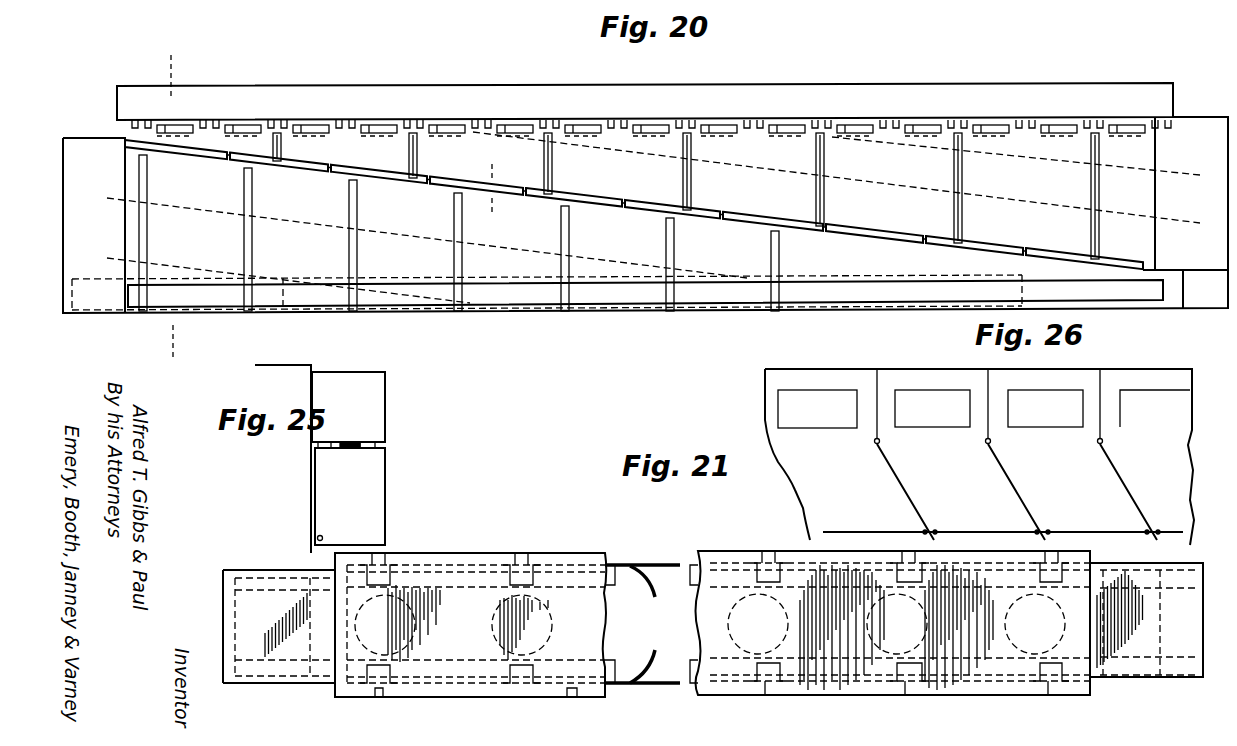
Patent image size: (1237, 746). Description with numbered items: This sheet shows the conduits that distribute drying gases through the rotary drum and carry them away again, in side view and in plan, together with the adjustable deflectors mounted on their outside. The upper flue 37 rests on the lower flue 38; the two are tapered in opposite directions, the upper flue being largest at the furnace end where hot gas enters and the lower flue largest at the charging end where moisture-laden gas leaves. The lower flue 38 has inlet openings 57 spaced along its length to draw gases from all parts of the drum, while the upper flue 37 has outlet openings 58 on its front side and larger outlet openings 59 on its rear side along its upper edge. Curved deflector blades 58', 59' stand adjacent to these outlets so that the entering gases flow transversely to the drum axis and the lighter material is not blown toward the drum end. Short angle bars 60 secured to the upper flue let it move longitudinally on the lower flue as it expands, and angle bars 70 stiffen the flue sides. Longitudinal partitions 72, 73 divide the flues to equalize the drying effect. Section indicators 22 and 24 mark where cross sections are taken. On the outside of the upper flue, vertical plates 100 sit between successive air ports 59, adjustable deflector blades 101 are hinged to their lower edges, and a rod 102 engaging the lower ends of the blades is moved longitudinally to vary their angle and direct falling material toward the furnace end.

In FIG. 20, the section line 22 is at (163, 60).
In FIG. 20, the section line 24 is at (486, 172).
In FIG. 20, the upper flue 37 is at (380, 147).
In FIG. 20, the lower flue 38 is at (398, 267).
In FIG. 21, the inlet openings 57 is at (402, 590).
In FIG. 20, the outlet openings 58 is at (234, 94).
In FIG. 21, the curved deflector blade 58' is at (652, 564).
In FIG. 20, the outlet openings 59 is at (298, 102).
In FIG. 26, the outlet openings 59 is at (834, 387).
In FIG. 21, the curved deflector blade 59' is at (648, 685).
In FIG. 20, the angle bars 60 is at (590, 198).
In FIG. 20, the angle bars 70 is at (825, 206).
In FIG. 20, the longitudinal partition 72 is at (197, 213).
In FIG. 20, the longitudinal partition 73 is at (762, 167).
In FIG. 26, the vertical plates 100 is at (1105, 383).
In FIG. 26, the adjustable deflector blades 101 is at (1023, 496).
In FIG. 26, the rod 102 is at (856, 532).